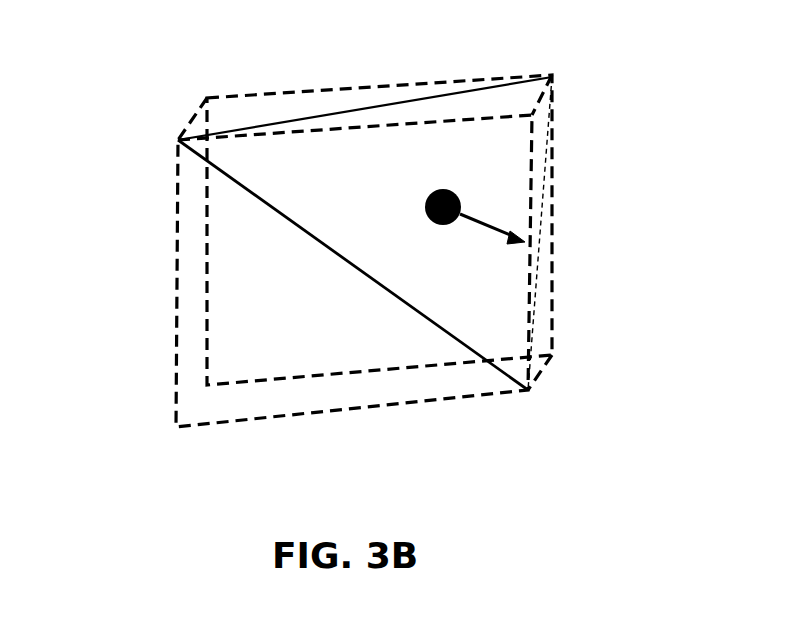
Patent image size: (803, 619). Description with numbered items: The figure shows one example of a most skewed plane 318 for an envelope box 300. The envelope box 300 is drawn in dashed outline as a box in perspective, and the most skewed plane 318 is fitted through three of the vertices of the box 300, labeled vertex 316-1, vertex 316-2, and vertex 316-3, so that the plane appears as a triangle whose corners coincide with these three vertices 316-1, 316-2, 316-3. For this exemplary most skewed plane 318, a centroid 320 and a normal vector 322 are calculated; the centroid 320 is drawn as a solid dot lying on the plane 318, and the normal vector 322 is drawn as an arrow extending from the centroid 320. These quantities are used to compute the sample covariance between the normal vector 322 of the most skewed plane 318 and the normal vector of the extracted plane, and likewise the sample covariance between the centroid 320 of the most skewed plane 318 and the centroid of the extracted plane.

The envelope box 300 is at (224, 423).
The vertex 316-1 is at (533, 391).
The vertex 316-2 is at (178, 140).
The vertex 316-3 is at (552, 76).
The most skewed plane 318 is at (290, 221).
The centroid 320 is at (425, 205).
The normal vector 322 is at (478, 228).